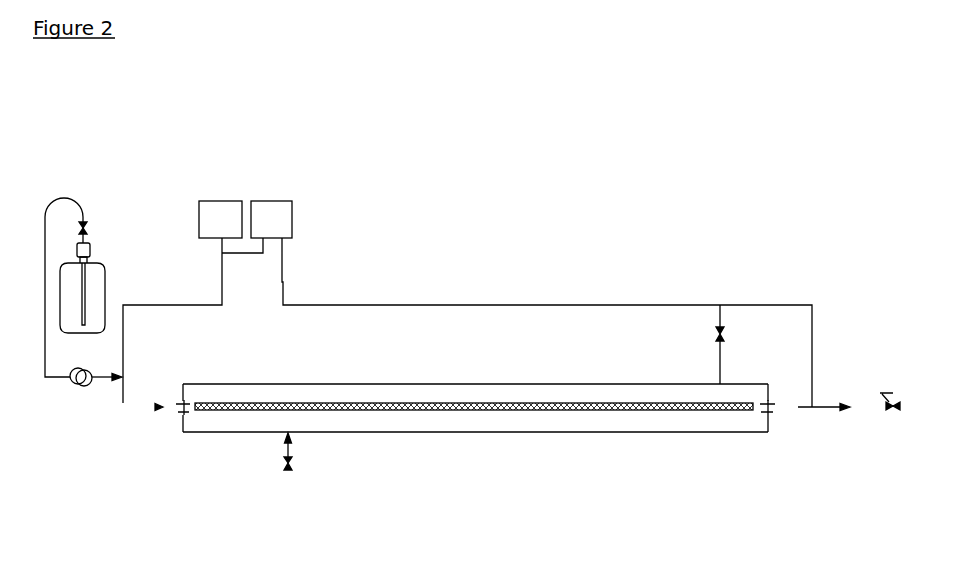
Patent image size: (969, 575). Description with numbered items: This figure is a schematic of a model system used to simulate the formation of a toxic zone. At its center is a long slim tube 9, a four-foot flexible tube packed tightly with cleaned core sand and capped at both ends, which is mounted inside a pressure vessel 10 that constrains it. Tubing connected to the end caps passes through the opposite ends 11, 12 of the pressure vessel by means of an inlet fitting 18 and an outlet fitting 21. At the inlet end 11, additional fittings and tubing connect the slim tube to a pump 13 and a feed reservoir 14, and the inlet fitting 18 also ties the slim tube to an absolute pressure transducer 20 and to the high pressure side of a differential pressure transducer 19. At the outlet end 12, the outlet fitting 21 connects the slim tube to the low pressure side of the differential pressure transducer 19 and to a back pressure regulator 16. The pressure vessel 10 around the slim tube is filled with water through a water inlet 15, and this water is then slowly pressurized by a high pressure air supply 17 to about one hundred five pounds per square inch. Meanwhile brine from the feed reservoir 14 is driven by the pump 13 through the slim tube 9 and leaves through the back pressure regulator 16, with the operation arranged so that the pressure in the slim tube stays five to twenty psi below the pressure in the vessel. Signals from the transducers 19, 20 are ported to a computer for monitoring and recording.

The slim tube 9 is at (465, 419).
The pressure vessel 10 is at (550, 443).
The inlet end of pressure vessel 11 is at (196, 425).
The outlet end of pressure vessel 12 is at (755, 427).
The pump 13 is at (82, 399).
The feed reservoir 14 is at (100, 267).
The water inlet 15 is at (297, 479).
The back pressure regulator 16 is at (886, 381).
The high pressure air supply 17 is at (715, 317).
The inlet fitting 18 is at (177, 388).
The differential pressure transducer 19 is at (250, 188).
The absolute pressure transducer 20 is at (211, 191).
The outlet fitting 21 is at (779, 418).